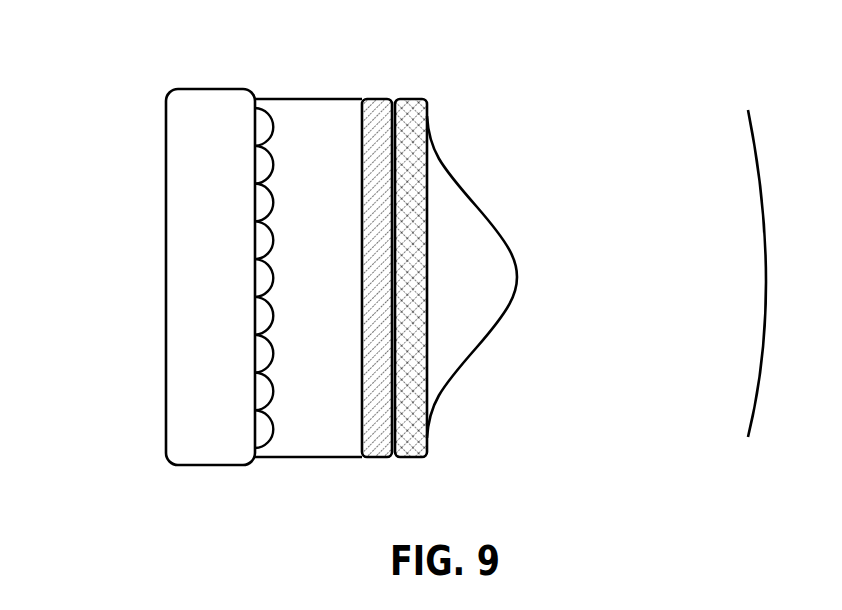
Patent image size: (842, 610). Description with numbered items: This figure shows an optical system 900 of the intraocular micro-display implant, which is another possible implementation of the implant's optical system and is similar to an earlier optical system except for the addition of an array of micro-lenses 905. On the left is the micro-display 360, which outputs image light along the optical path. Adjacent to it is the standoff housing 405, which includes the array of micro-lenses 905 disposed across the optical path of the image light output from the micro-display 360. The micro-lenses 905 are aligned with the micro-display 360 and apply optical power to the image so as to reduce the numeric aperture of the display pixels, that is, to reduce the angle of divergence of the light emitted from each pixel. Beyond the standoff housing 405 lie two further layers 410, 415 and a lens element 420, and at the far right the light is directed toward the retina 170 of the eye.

The optical system 900 is at (103, 60).
The micro-display 360 is at (194, 288).
The standoff housing 405 is at (301, 288).
The array of micro-lenses 905 is at (290, 131).
The first optical layer 410 is at (373, 99).
The second optical layer 415 is at (420, 99).
The lens 420 is at (455, 288).
The retina 170 is at (758, 368).